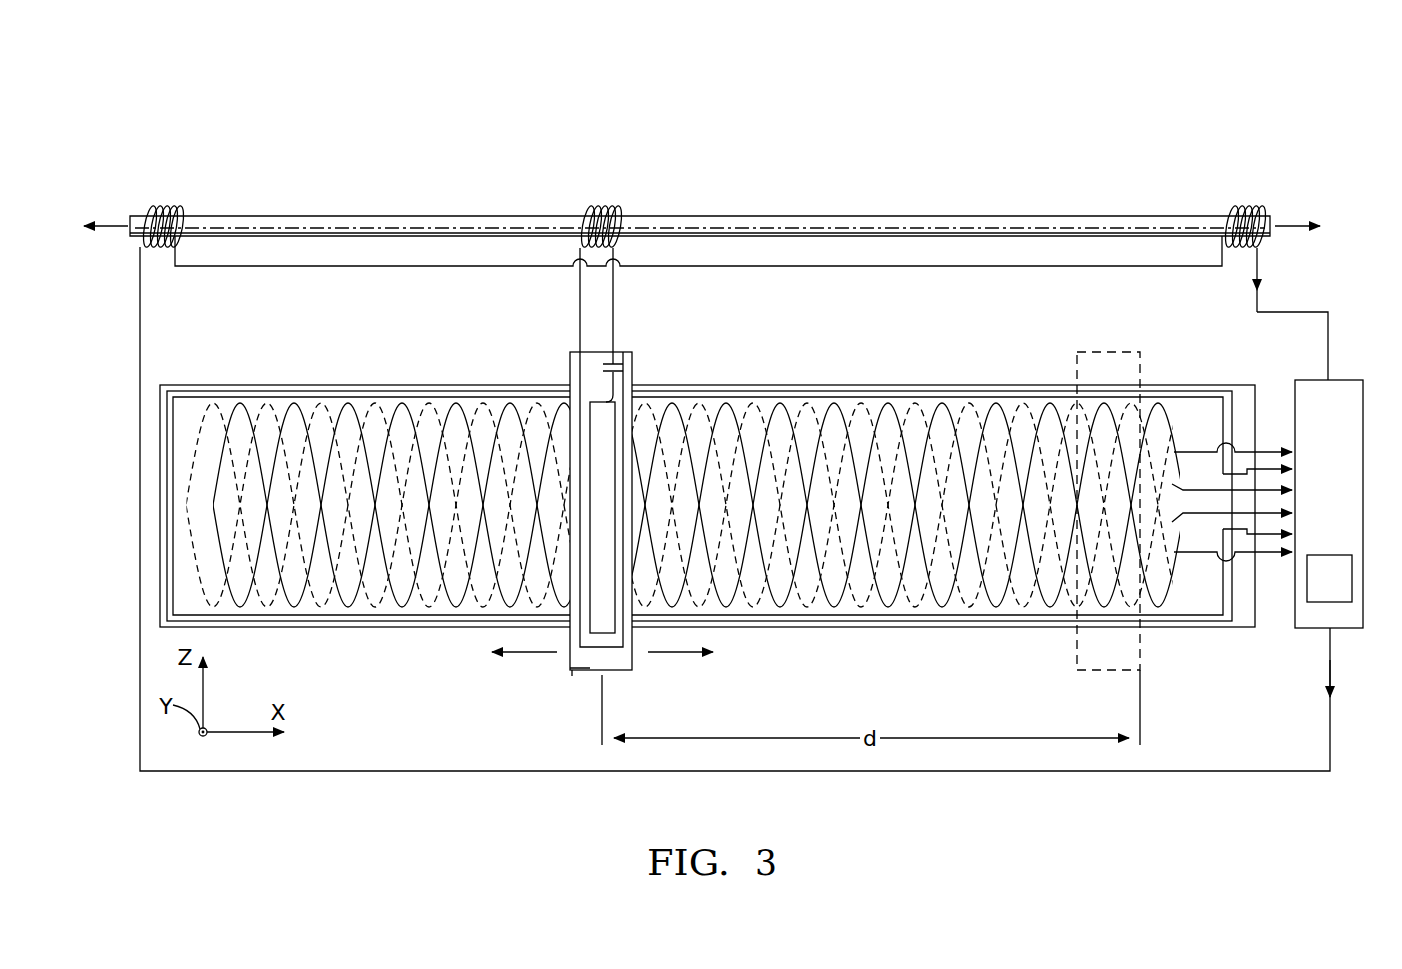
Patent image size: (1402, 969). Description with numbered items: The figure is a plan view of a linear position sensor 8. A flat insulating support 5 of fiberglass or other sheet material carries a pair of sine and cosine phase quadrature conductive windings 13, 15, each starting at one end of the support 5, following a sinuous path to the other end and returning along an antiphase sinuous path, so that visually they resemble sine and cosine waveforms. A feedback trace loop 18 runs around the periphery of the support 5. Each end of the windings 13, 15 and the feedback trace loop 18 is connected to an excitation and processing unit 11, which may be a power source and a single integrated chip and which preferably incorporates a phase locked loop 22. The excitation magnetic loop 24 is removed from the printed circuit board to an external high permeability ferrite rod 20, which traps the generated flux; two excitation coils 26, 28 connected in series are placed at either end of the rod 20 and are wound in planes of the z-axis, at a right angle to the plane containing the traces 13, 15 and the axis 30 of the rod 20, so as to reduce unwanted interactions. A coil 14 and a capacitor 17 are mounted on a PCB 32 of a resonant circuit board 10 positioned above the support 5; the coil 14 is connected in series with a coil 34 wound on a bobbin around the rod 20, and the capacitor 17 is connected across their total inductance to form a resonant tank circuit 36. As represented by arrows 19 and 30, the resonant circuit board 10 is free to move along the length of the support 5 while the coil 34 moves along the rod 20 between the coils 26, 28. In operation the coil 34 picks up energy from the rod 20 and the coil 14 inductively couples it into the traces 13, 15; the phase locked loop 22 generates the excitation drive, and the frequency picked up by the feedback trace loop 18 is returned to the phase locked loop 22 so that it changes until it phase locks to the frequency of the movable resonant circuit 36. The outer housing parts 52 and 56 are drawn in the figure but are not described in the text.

The support 5 is at (160, 568).
The linear position sensor 8 is at (492, 716).
The resonant circuit board 10 is at (612, 503).
The excitation and processing unit 11 is at (1355, 628).
The sine winding 13 is at (685, 460).
The coil 14 is at (617, 647).
The cosine winding 15 is at (1135, 405).
The capacitor 17 is at (617, 363).
The feedback trace loop 18 is at (1183, 617).
The arrows 19 is at (523, 652).
The ferrite rod 20 is at (873, 216).
The phase locked loop 22 is at (1315, 603).
The excitation magnetic loop 24 is at (142, 197).
The excitation coil 26 is at (168, 207).
The excitation coil 28 is at (1250, 205).
The axis of rod 30 is at (115, 228).
The PCB 32 is at (585, 663).
The coil 34 is at (605, 205).
The resonant tank circuit 36 is at (1068, 362).
The outer shield 52 is at (1220, 385).
The housing wall 56 is at (239, 385).